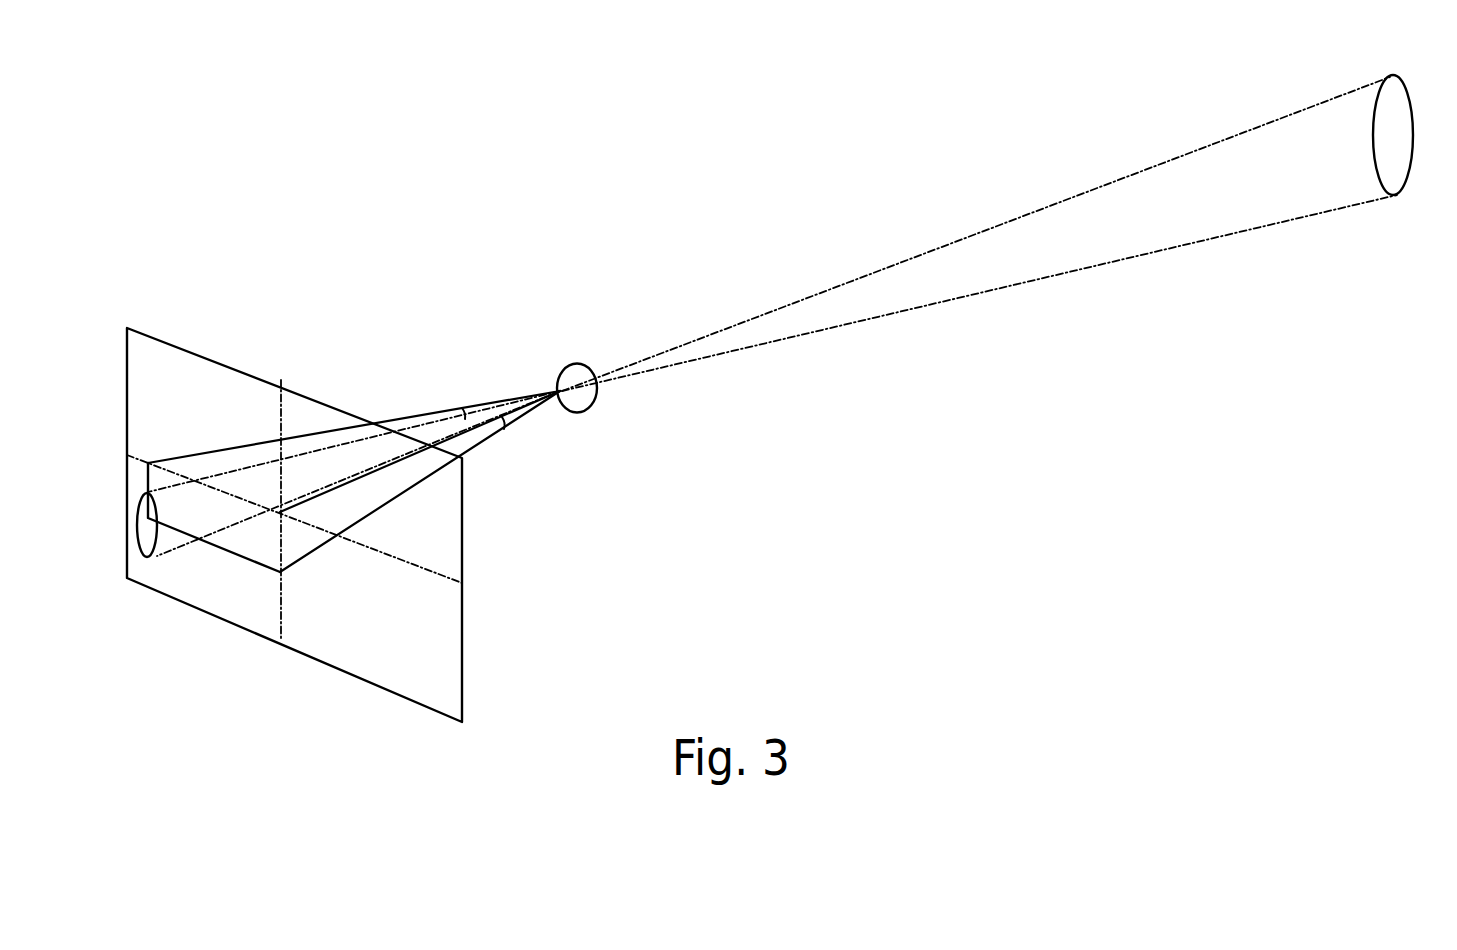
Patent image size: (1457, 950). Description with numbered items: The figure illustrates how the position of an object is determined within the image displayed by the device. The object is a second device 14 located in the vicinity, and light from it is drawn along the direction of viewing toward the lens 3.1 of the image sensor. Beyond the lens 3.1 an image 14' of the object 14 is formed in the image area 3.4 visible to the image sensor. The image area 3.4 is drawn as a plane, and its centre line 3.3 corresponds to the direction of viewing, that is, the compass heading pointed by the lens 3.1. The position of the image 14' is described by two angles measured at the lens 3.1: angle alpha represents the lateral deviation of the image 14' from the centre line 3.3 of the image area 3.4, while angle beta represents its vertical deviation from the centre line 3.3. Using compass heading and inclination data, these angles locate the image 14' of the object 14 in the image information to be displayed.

The second device 14 is at (1408, 112).
The image of the object 14' is at (124, 562).
The lens 3.1 is at (575, 372).
The centre line 3.3 is at (280, 516).
The image area 3.4 is at (200, 356).